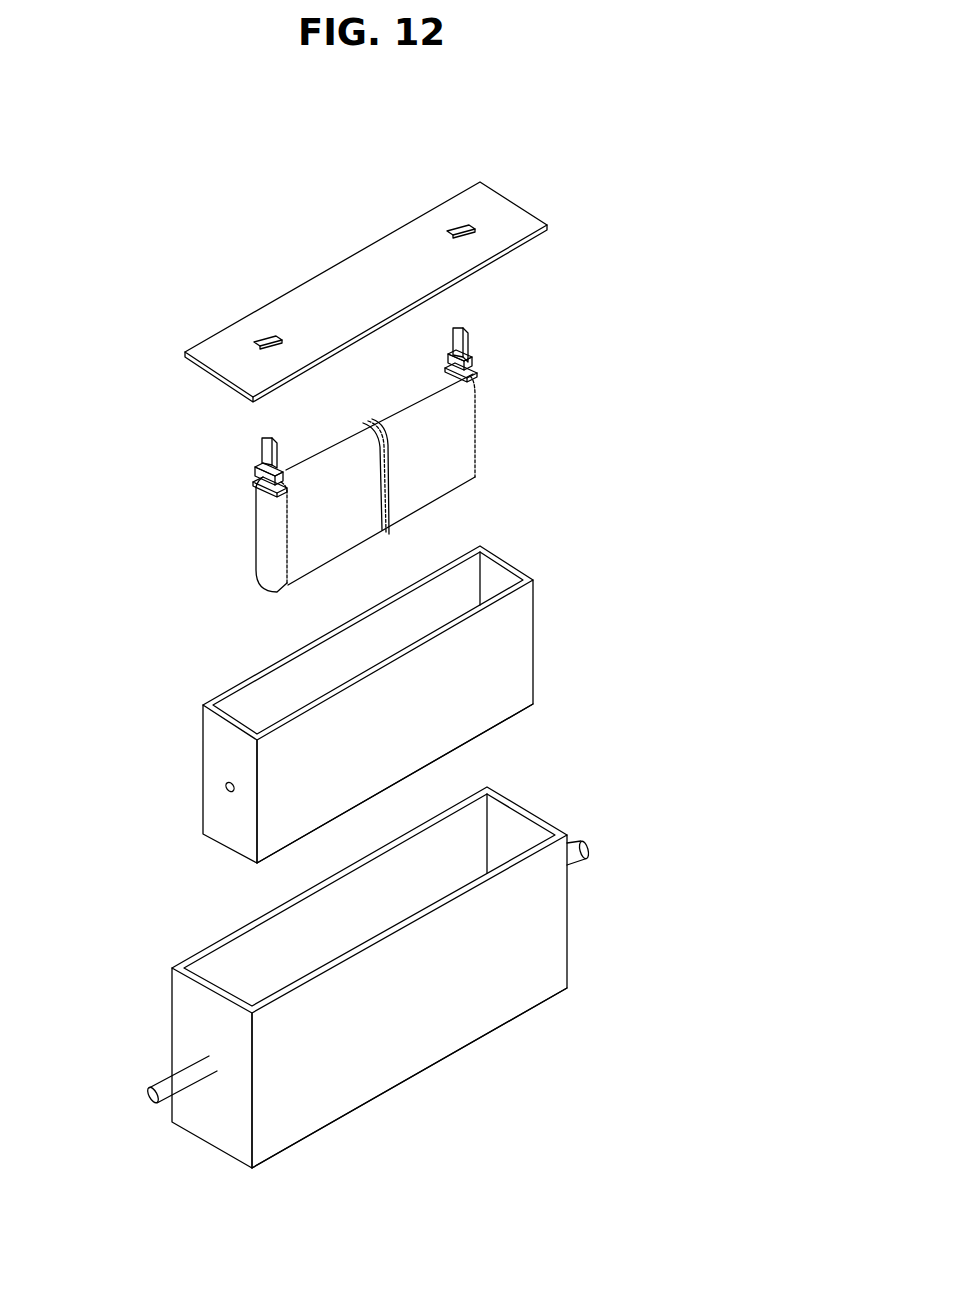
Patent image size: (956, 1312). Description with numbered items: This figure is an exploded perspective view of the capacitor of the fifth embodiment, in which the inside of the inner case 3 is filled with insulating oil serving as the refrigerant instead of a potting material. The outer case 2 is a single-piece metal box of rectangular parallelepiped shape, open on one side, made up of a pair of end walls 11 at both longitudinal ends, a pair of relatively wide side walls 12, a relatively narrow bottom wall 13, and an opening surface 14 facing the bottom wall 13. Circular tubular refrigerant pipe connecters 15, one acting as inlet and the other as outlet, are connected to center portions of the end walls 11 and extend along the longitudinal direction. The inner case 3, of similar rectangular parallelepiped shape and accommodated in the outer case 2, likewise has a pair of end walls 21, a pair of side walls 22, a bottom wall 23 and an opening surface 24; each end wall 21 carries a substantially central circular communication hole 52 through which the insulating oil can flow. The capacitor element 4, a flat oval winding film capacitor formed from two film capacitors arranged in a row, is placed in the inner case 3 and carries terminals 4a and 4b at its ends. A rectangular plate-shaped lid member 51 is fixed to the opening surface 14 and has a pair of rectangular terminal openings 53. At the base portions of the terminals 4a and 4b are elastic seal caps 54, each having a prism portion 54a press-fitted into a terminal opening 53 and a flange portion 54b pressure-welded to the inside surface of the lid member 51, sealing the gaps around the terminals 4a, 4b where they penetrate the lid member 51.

The outer case 2 is at (372, 949).
The inner case 3 is at (353, 678).
The capacitor element 4 is at (362, 450).
The terminal 4a is at (259, 449).
The terminal 4b is at (466, 340).
The end walls 11 is at (543, 820).
The side walls 12 is at (223, 935).
The bottom wall 13 is at (388, 1072).
The opening surface 14 is at (386, 872).
The refrigerant pipe connecters 15 is at (584, 850).
The end walls 21 is at (490, 552).
The side walls 22 is at (388, 652).
The bottom wall 23 is at (450, 753).
The opening surface 24 is at (347, 650).
The lid member 51 is at (393, 267).
The communication hole 52 is at (226, 792).
The terminal openings 53 is at (450, 229).
The seal caps 54 is at (362, 432).
The prism portion 54a is at (478, 359).
The flange portion 54b is at (481, 376).